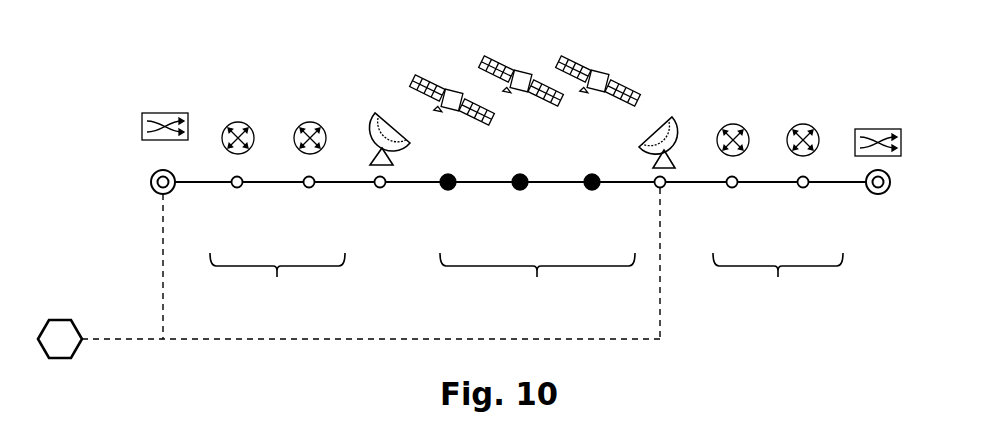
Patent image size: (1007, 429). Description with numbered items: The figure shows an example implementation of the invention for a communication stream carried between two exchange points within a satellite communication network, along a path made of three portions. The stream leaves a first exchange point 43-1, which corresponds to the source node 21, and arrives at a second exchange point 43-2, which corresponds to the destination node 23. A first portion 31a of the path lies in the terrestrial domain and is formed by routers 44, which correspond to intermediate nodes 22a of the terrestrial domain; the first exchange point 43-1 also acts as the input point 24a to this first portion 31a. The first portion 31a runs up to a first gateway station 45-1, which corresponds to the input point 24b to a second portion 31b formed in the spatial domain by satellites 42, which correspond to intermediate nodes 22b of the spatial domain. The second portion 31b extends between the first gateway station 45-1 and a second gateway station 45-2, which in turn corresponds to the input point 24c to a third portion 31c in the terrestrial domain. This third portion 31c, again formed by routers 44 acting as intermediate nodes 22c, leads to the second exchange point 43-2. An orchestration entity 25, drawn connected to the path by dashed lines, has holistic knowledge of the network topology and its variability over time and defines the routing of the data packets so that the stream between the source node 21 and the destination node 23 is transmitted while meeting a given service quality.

The source node 21 is at (121, 208).
The input point 24a is at (155, 190).
The destination node 23 is at (888, 192).
The intermediate nodes 22a is at (308, 188).
The intermediate nodes 22b is at (517, 190).
The intermediate nodes 22c is at (803, 188).
The input point 24b is at (381, 188).
The input point 24c is at (665, 188).
The orchestration entity 25 is at (62, 317).
The first portion 31a is at (277, 279).
The second portion 31b is at (537, 279).
The third portion 31c is at (778, 279).
The satellites 42 is at (500, 63).
The first exchange point 43-1 is at (165, 113).
The second exchange point 43-2 is at (878, 129).
The routers 44 is at (245, 122).
The first gateway station 45-1 is at (375, 113).
The second gateway station 45-2 is at (668, 117).